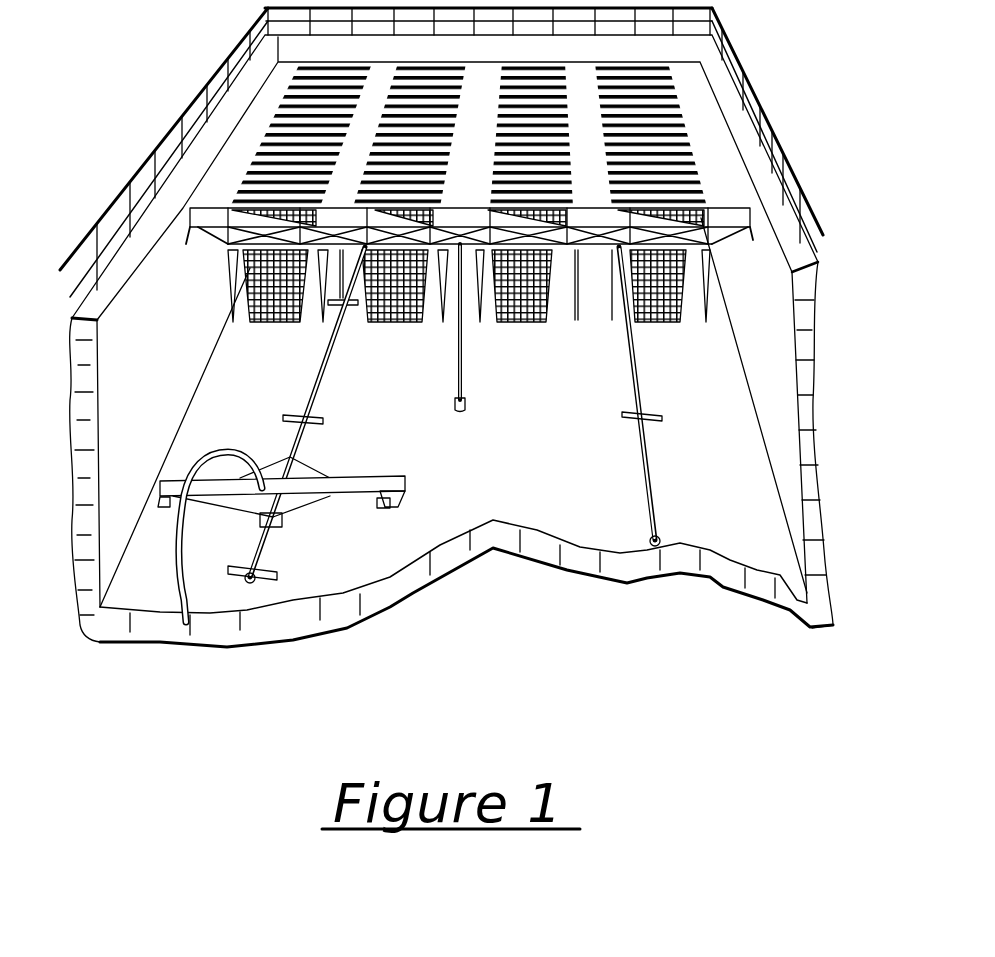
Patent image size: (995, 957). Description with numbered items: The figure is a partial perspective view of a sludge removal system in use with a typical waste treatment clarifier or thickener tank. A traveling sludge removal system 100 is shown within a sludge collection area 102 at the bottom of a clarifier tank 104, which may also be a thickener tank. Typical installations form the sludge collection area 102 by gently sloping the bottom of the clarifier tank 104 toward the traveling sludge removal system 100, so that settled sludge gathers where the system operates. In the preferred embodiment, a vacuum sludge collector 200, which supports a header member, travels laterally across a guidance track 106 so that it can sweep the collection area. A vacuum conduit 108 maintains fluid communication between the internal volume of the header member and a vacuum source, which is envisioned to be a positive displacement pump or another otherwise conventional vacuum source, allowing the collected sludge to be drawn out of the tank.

The traveling sludge removal system 100 is at (150, 409).
The sludge collection area 102 is at (228, 390).
The clarifier tank 104 is at (713, 447).
The guidance track 106 is at (325, 360).
The vacuum conduit 108 is at (170, 628).
The vacuum sludge collector 200 is at (354, 498).